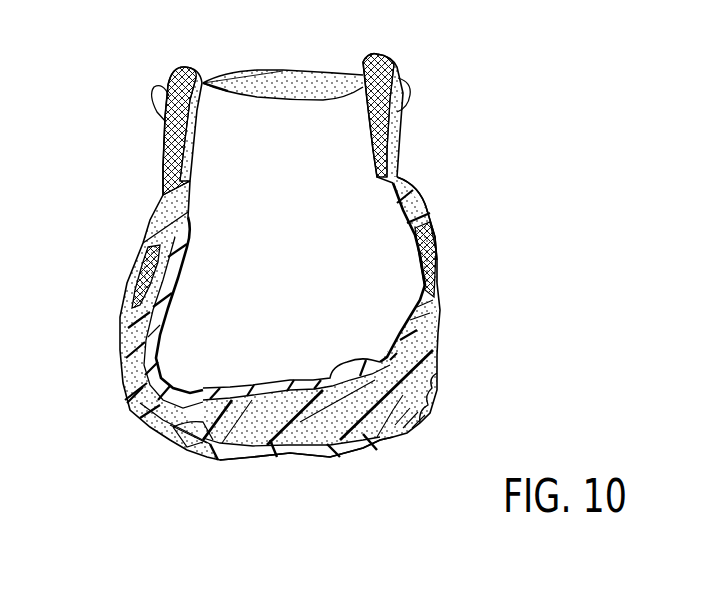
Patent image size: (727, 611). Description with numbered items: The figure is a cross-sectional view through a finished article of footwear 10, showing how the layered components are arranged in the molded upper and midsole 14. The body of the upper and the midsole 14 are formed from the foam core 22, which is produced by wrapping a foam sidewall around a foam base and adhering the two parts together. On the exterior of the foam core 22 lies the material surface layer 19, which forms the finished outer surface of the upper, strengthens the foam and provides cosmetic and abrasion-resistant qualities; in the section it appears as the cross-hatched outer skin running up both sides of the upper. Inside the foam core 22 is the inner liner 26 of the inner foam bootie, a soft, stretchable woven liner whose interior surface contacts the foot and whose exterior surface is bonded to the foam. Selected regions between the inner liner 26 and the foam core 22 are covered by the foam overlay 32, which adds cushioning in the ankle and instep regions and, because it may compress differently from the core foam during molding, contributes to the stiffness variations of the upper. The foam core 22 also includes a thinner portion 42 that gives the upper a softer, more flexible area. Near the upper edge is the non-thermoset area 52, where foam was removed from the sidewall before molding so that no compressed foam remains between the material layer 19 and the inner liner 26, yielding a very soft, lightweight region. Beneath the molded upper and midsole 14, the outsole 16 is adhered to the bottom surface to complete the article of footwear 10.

The article of footwear 10 is at (459, 94).
The midsole unit 14 is at (198, 423).
The outsole 16 is at (357, 443).
The material surface layer 19 is at (393, 55).
The foam core 22 is at (370, 110).
The inner liner 26 is at (417, 260).
The foam overlay 32 is at (180, 242).
The thinner portion 42 is at (137, 275).
The non-thermoset area 52 is at (432, 242).